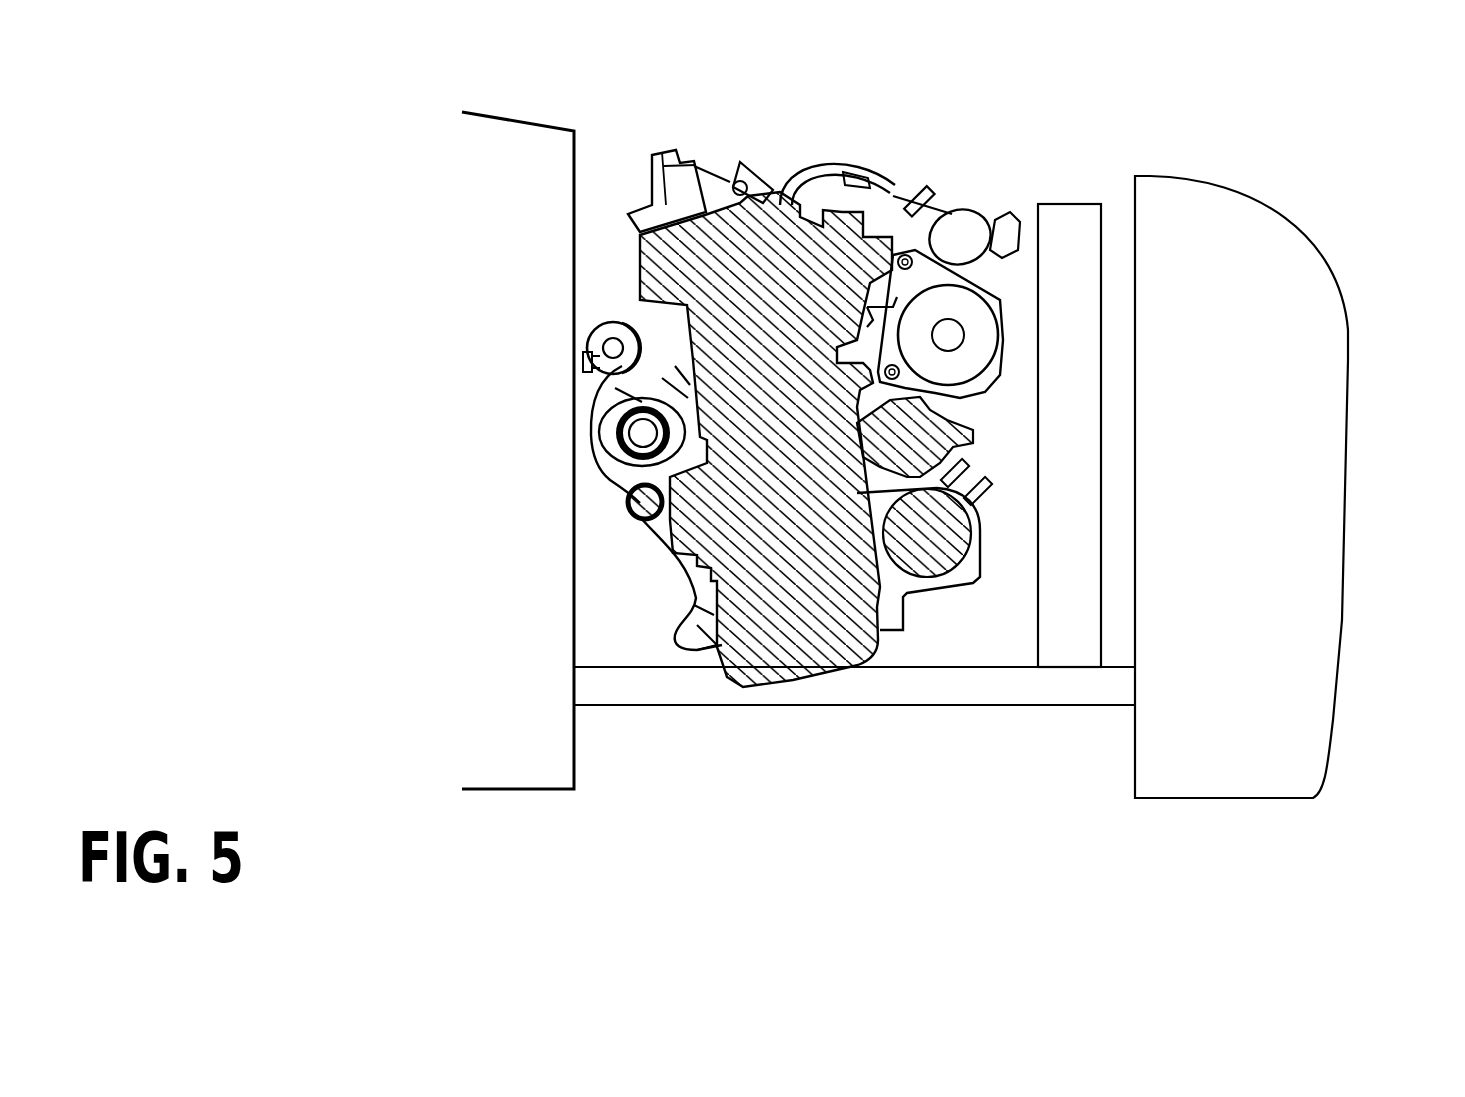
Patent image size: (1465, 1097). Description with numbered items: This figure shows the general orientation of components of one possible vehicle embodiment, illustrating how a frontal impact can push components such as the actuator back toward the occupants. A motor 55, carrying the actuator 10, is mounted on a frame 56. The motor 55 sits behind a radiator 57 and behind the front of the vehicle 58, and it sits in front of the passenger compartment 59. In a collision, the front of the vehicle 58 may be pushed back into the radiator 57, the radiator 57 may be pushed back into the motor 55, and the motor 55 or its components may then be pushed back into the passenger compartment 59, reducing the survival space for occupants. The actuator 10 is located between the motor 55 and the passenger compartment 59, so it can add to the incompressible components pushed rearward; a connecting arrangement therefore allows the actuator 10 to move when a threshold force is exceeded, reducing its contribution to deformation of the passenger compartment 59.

The actuator 10 is at (617, 353).
The motor 55 is at (784, 350).
The frame 56 is at (940, 685).
The radiator 57 is at (1075, 335).
The front of the vehicle 58 is at (1322, 476).
The passenger compartment 59 is at (517, 333).